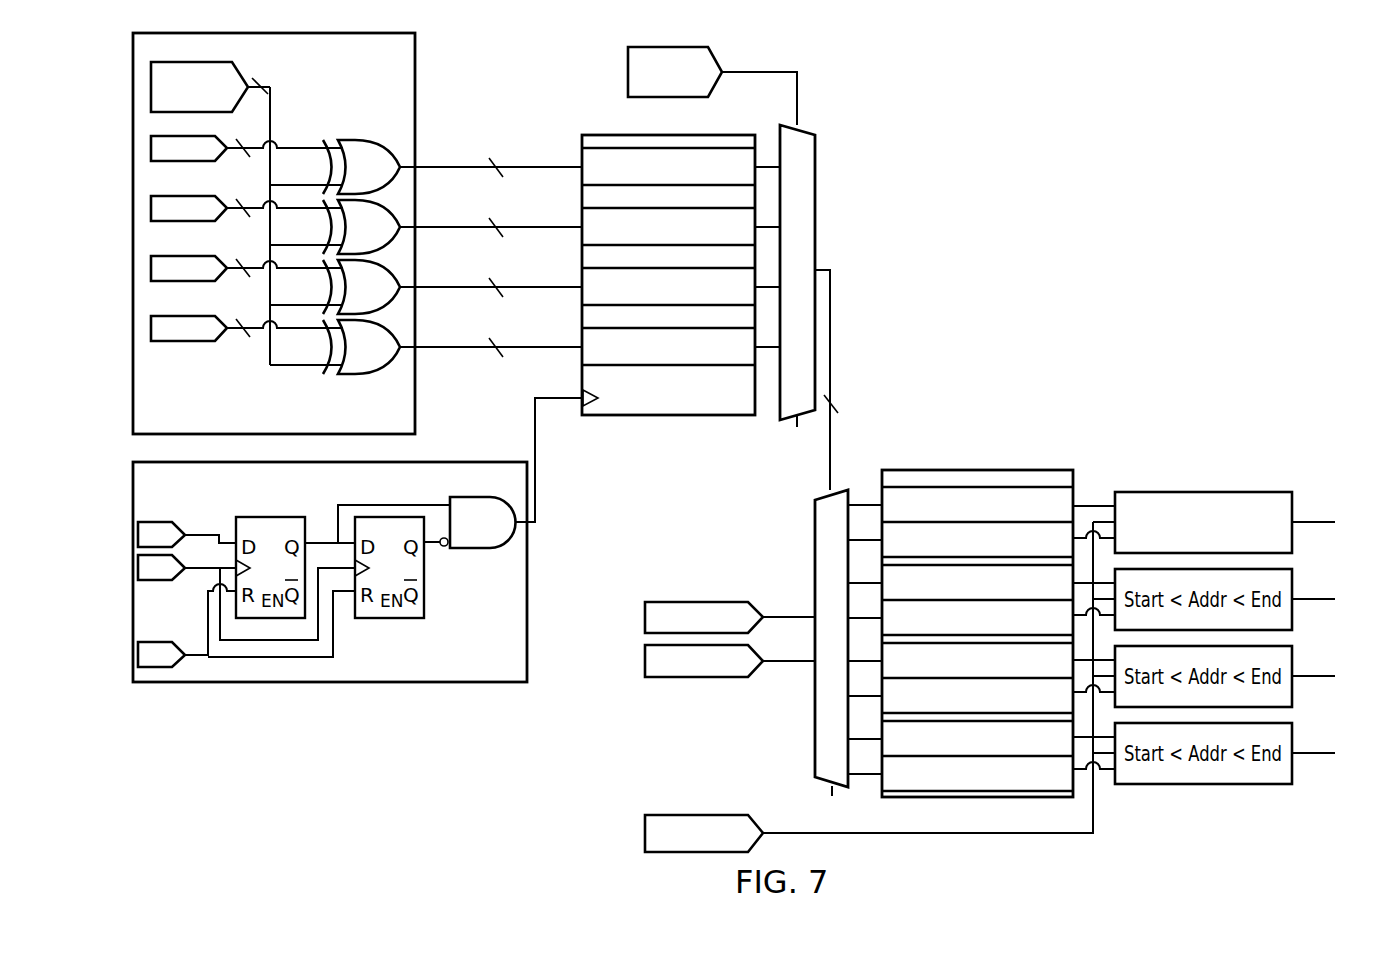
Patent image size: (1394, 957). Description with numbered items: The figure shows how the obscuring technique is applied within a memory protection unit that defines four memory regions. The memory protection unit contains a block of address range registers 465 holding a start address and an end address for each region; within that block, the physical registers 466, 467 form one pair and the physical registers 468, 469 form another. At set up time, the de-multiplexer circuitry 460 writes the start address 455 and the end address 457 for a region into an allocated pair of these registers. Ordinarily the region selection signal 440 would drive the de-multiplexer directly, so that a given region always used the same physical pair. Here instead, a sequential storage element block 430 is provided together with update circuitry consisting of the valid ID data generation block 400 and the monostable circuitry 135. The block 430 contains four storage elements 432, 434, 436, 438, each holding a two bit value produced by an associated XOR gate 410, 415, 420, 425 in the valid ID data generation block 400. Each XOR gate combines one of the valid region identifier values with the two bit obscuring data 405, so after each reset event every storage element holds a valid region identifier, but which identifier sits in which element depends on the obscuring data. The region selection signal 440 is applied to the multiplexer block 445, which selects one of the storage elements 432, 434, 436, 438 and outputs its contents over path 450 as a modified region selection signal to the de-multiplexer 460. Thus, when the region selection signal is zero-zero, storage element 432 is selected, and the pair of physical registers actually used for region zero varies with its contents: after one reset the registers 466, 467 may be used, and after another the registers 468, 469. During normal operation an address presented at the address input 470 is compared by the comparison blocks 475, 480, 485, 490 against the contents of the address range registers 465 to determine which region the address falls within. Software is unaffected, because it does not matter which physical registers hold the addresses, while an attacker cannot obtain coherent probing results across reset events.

The monostable circuitry 135 is at (316, 683).
The valid ID data generation block 400 is at (416, 82).
The obscuring data 405 is at (240, 62).
The XOR gate 410 is at (416, 161).
The XOR gate 415 is at (416, 221).
The XOR gate 420 is at (416, 281).
The XOR gate 425 is at (416, 341).
The sequential storage element block 430 is at (662, 417).
The storage element 432 is at (582, 152).
The storage element 434 is at (582, 212).
The storage element 436 is at (582, 272).
The storage element 438 is at (582, 332).
The region selection signal 440 is at (628, 70).
The multiplexer block 445 is at (815, 170).
The path 450 is at (830, 362).
The start address 455 is at (698, 602).
The end address 457 is at (700, 678).
The de-multiplexer circuitry 460 is at (817, 502).
The address range registers 465 is at (969, 470).
The physical register 466 is at (1077, 492).
The physical register 467 is at (1075, 530).
The physical register 468 is at (1052, 758).
The physical register 469 is at (901, 797).
The address input 470 is at (645, 832).
The comparison block 475 is at (1294, 536).
The comparison block 480 is at (1294, 613).
The comparison block 485 is at (1294, 690).
The comparison block 490 is at (1294, 767).